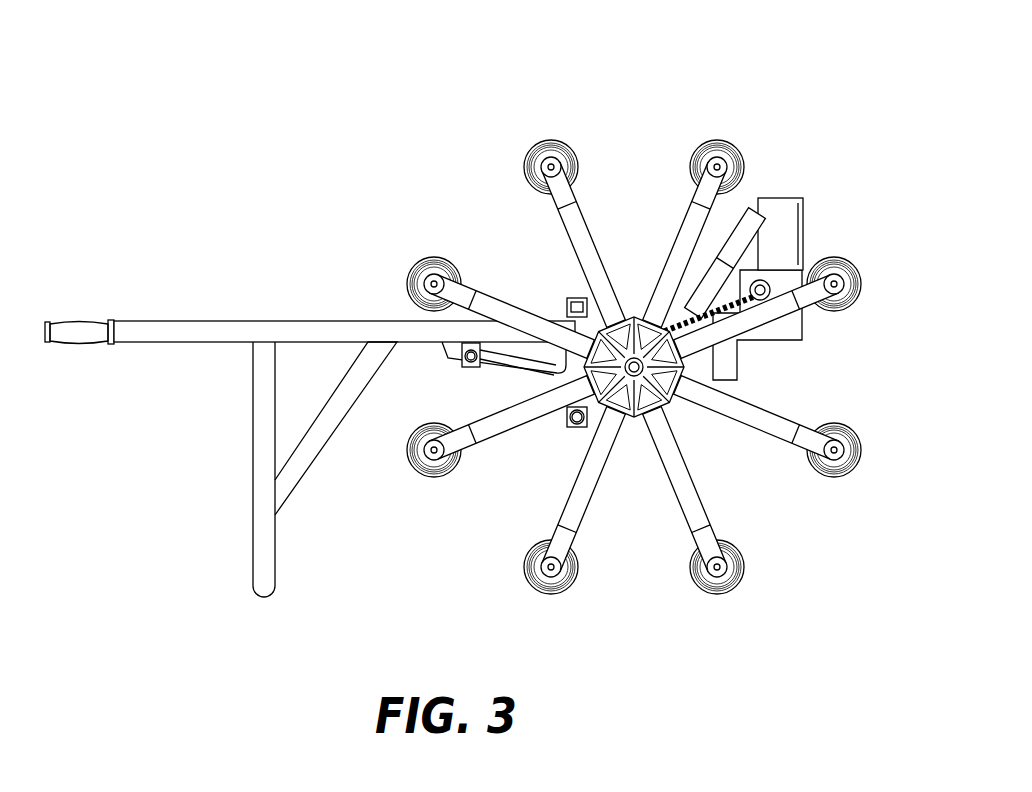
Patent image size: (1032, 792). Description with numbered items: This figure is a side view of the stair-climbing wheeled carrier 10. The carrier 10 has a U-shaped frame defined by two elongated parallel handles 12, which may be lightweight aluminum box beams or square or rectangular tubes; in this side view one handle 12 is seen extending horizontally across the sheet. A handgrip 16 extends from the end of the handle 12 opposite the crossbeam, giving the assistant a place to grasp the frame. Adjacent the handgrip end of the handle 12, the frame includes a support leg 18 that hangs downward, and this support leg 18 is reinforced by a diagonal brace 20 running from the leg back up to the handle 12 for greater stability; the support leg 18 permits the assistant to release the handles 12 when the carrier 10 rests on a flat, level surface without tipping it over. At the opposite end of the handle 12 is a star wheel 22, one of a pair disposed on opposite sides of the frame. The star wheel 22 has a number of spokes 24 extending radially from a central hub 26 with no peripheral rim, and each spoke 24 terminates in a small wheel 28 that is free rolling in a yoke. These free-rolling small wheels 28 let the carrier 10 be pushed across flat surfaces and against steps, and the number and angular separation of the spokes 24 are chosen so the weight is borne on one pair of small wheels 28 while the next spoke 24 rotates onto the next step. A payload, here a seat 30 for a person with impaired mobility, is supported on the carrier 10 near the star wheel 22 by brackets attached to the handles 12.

The stair-climbing wheeled carrier 10 is at (474, 300).
The handle 12 is at (222, 321).
The handgrip 16 is at (68, 320).
The support leg 18 is at (253, 440).
The diagonal brace 20 is at (300, 483).
The star wheel 22 is at (655, 335).
The spoke 24 is at (491, 298).
The central hub 26 is at (627, 404).
The small wheel 28 is at (563, 143).
The seat 30 is at (744, 208).